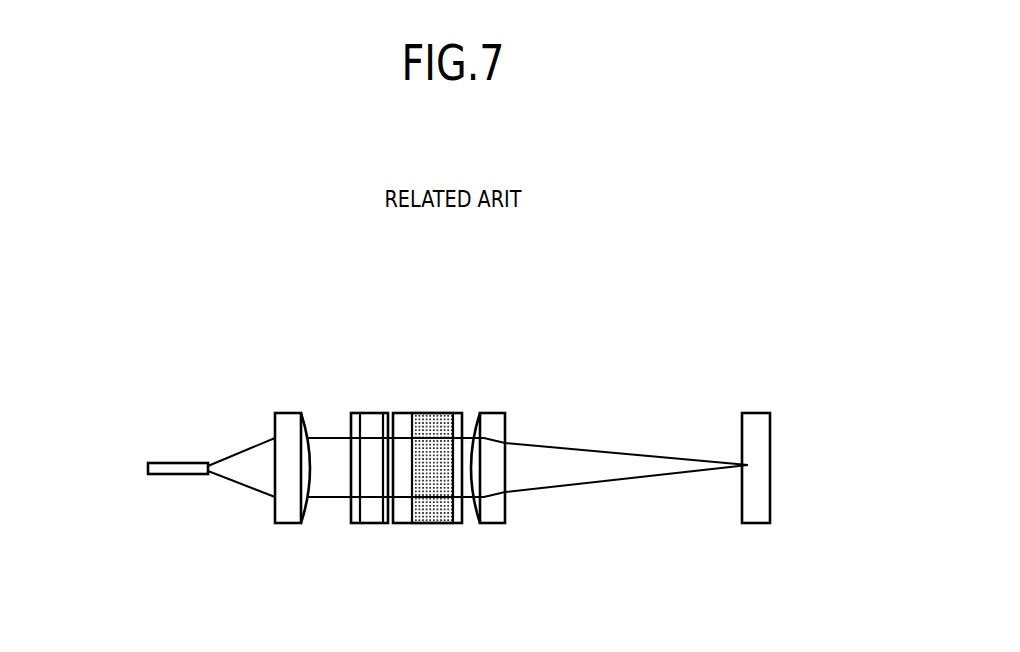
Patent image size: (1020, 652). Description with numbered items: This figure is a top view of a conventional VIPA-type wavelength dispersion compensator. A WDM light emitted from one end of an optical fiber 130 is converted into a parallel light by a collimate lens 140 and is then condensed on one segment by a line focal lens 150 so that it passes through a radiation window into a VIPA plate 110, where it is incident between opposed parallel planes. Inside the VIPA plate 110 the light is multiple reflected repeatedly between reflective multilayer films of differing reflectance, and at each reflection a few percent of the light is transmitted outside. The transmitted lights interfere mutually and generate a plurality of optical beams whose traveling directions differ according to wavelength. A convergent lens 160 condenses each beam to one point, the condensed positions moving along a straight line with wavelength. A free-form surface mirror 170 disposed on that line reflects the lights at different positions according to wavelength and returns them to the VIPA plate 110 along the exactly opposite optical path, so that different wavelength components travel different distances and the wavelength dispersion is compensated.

The optical fiber 130 is at (176, 462).
The collimate lens 140 is at (285, 413).
The line focal lens 150 is at (368, 413).
The VIPA plate 110 is at (428, 413).
The convergent lens 160 is at (495, 413).
The free-form surface mirror 170 is at (757, 413).